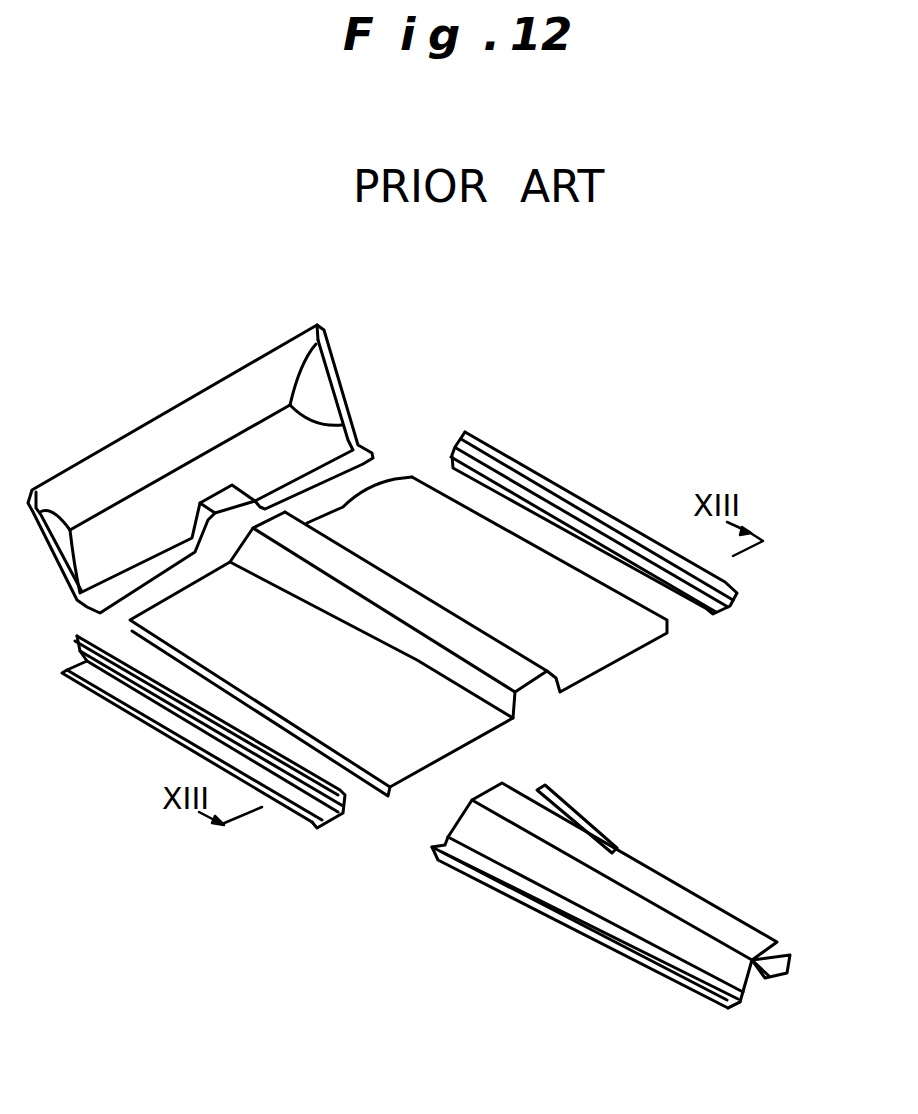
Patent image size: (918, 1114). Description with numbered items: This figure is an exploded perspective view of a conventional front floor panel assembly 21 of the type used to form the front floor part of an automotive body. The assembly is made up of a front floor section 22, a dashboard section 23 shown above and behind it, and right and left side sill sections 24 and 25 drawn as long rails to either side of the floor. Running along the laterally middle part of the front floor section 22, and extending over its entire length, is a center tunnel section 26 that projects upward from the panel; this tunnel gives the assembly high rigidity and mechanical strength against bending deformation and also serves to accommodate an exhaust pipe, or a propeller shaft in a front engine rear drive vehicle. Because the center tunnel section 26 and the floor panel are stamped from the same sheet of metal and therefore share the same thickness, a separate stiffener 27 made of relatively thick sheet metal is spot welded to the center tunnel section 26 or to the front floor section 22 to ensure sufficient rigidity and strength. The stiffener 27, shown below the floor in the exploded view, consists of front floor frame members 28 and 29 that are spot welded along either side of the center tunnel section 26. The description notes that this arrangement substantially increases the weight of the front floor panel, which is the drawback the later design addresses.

The front floor panel assembly 21 is at (580, 430).
The front floor section 22 is at (436, 636).
The dashboard section 23 is at (227, 396).
The right side sill section 24 is at (573, 497).
The left side sill section 25 is at (143, 703).
The center tunnel section 26 is at (525, 673).
The stiffener 27 is at (661, 932).
The front floor frame member 28 is at (793, 965).
The front floor frame member 29 is at (727, 1006).